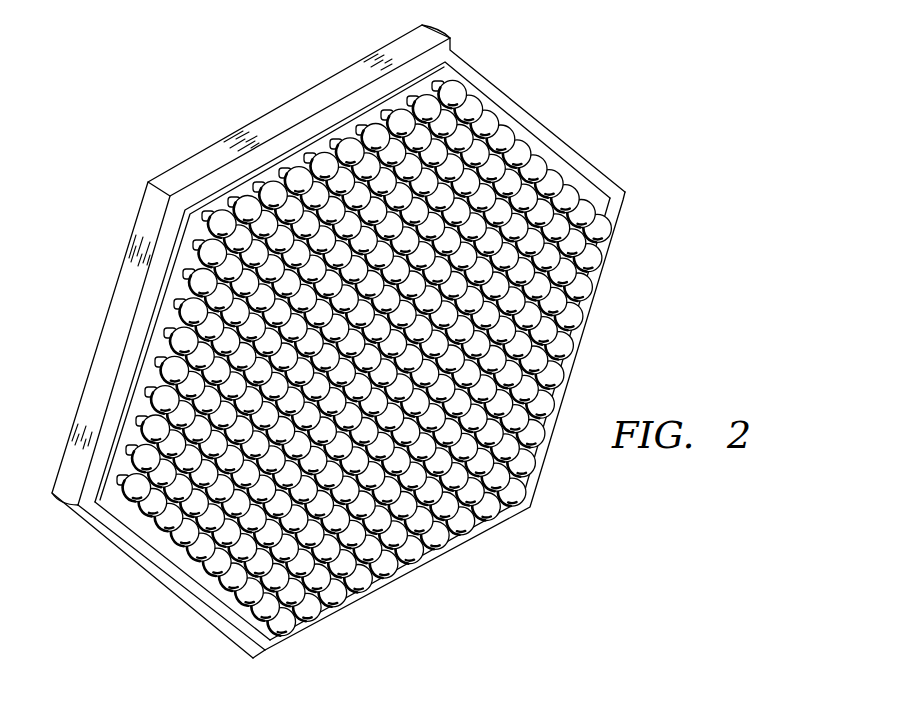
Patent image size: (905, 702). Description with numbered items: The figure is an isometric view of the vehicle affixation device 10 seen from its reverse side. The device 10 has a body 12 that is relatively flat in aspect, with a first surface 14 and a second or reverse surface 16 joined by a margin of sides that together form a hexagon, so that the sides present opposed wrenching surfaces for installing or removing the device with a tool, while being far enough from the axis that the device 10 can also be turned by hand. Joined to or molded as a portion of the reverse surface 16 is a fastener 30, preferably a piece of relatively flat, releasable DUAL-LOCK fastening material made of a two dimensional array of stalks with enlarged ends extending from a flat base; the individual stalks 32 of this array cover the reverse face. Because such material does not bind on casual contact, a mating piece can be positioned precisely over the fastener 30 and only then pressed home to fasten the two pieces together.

The vehicle affixation device 10 is at (358, 341).
The body 12 is at (104, 315).
The first surface 14 is at (281, 121).
The second or reverse surface 16 is at (153, 385).
The fastener 30 is at (540, 459).
The dome 32 is at (598, 238).